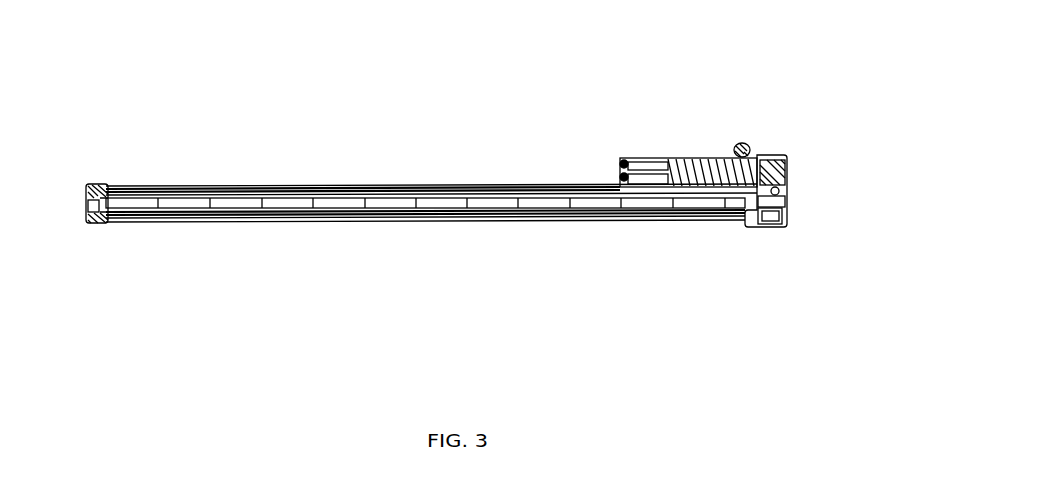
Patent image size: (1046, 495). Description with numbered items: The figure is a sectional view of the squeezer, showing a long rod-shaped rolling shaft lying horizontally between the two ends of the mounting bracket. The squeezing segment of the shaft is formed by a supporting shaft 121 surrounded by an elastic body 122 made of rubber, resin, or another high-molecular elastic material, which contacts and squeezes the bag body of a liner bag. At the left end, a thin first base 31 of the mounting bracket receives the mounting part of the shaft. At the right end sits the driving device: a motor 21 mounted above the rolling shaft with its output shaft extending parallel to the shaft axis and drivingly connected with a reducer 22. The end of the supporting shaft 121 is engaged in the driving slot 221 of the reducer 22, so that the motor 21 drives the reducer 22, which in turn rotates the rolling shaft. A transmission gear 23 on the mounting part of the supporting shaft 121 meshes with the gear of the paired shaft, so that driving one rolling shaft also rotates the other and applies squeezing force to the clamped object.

The elastic body 122 is at (416, 190).
The supporting shaft 121 is at (617, 205).
The first base 31 is at (85, 226).
The motor 21 is at (688, 158).
The reducer 22 is at (787, 193).
The driving slot 221 is at (785, 223).
The transmission gear 23 is at (752, 228).